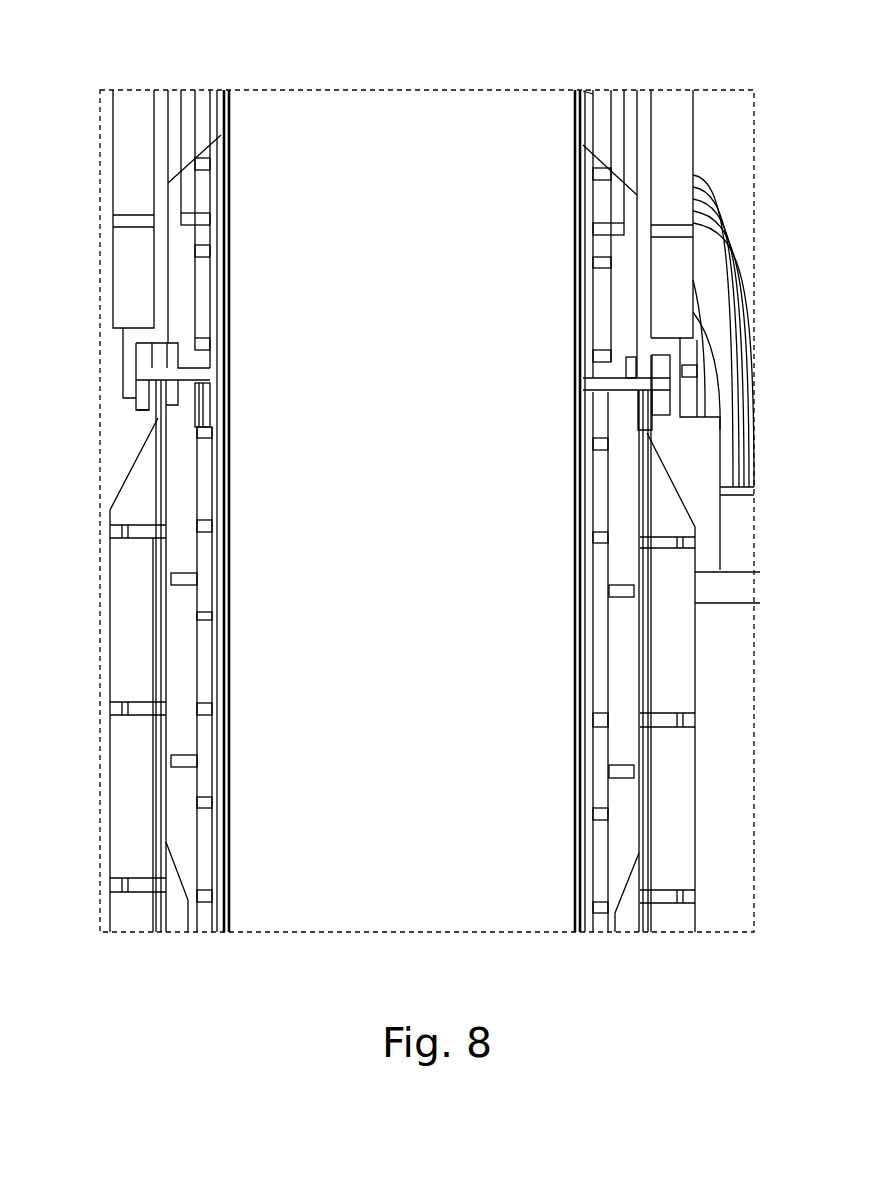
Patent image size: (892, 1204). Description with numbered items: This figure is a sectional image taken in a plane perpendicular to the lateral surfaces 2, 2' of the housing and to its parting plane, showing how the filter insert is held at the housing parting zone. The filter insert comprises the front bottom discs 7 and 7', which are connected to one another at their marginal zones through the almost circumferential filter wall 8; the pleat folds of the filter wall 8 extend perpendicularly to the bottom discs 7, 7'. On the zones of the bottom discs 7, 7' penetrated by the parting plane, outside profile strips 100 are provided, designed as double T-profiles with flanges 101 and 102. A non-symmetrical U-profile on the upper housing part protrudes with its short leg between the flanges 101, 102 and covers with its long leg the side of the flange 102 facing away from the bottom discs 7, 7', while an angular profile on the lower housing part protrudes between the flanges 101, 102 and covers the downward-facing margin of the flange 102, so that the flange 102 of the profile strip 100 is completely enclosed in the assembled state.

The filter wall 8 is at (453, 105).
The lateral surface 2 is at (129, 511).
The lateral surface 2' is at (689, 511).
The bottom disc 7 is at (262, 511).
The bottom disc 7' is at (542, 511).
The profile strip 100 is at (192, 366).
The flange 101 is at (183, 390).
The flange 102 is at (136, 378).